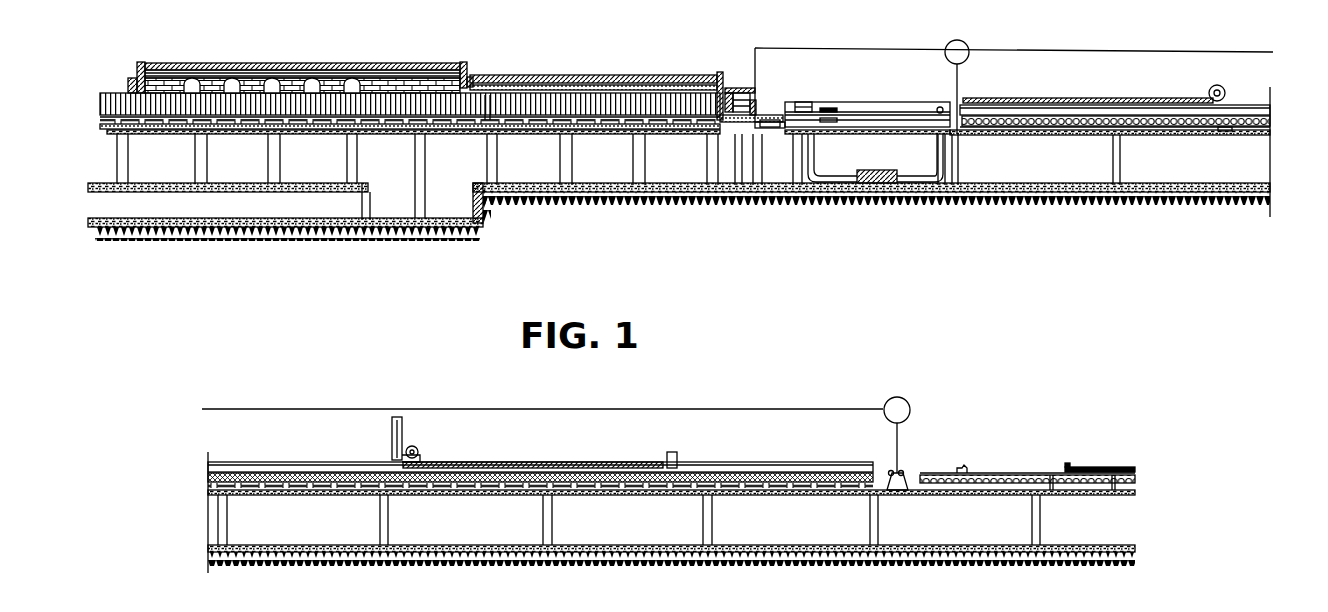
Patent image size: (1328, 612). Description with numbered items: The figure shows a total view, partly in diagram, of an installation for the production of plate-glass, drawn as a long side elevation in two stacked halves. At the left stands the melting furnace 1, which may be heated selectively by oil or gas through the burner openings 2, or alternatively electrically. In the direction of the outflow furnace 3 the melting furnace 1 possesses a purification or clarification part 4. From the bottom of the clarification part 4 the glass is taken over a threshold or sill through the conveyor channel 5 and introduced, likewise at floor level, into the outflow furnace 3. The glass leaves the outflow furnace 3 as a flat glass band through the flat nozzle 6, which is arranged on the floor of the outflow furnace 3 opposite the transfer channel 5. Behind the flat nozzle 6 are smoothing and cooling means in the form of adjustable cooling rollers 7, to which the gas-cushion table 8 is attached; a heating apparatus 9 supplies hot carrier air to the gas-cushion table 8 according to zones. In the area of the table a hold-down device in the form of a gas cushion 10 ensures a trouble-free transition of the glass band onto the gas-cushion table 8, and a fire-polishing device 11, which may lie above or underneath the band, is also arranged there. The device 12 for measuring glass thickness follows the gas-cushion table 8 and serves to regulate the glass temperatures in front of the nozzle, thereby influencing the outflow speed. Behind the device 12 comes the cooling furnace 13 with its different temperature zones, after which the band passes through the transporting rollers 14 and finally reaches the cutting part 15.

The melting furnace 1 is at (395, 82).
The burner openings 2 is at (353, 87).
The outflow furnace 3 is at (742, 90).
The clarification part 4 is at (607, 87).
The conveyor channel 5 is at (723, 120).
The flat nozzle 6 is at (753, 112).
The cooling rollers 7 is at (767, 117).
The gas-cushion table 8 is at (885, 112).
The heating apparatus 9 is at (877, 184).
The gas cushion 10 is at (805, 102).
The fire-polishing device 11 is at (828, 108).
The device for measuring glass thickness 12 is at (948, 44).
The cooling furnace 13 is at (775, 467).
The transporting rollers 14 is at (902, 473).
The cutting part 15 is at (978, 473).